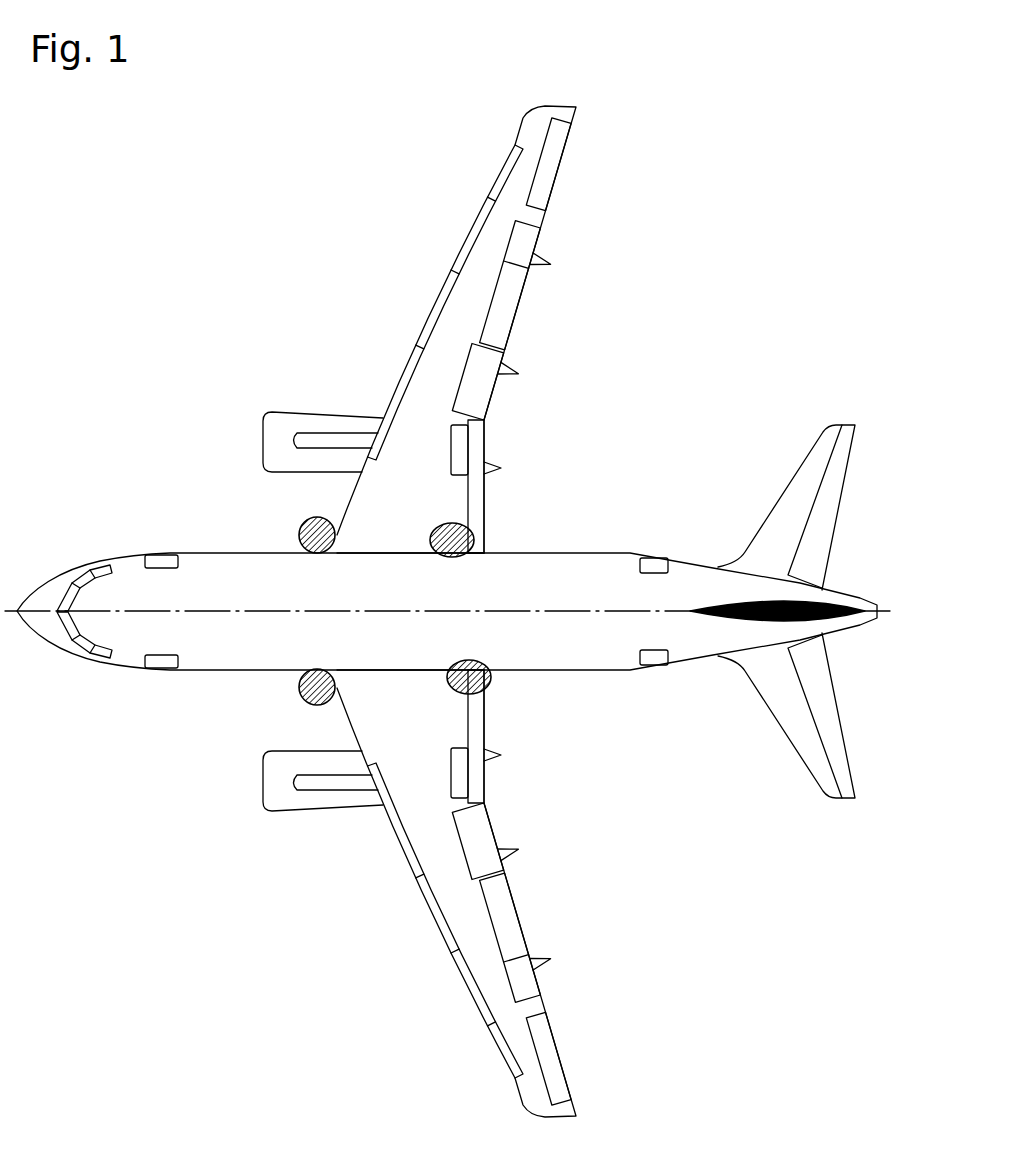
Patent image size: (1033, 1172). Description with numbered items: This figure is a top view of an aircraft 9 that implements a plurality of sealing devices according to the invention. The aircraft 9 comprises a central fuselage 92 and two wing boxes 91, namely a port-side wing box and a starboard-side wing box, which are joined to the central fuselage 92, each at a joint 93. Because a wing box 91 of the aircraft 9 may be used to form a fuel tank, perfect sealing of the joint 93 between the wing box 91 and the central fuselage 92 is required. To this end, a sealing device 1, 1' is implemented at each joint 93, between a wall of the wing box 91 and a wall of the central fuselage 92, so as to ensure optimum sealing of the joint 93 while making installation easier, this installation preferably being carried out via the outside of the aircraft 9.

The aircraft 9 is at (68, 426).
The wing box 91 is at (568, 283).
The central fuselage 92 is at (634, 545).
The joint 93 is at (405, 553).
The sealing device 1 is at (411, 615).
The sealing device 1' is at (381, 610).